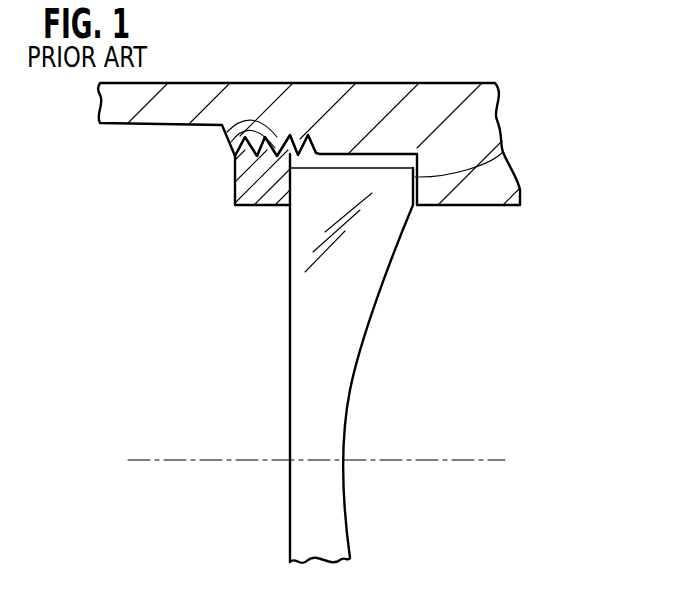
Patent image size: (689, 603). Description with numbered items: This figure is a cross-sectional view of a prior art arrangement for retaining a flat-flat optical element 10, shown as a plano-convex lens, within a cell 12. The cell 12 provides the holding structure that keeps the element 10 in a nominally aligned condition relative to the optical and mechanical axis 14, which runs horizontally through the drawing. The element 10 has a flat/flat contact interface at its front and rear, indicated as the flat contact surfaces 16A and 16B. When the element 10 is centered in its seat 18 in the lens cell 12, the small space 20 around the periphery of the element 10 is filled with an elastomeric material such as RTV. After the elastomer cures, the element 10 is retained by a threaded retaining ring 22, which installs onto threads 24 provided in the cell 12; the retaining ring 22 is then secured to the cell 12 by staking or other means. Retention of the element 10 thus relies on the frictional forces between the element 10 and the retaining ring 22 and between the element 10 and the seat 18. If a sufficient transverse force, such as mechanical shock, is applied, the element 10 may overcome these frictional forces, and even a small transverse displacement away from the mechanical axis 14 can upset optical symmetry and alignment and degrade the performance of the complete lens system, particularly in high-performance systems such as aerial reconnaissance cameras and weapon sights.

The optical element 10 is at (385, 308).
The cell 12 is at (494, 208).
The optical and mechanical axis 14 is at (245, 457).
The flat contact surface 16A is at (293, 178).
The flat contact surface 16B is at (409, 179).
The seat 18 is at (503, 152).
The small space 20 is at (306, 142).
The threaded retaining ring 22 is at (223, 185).
The threads 24 is at (231, 142).